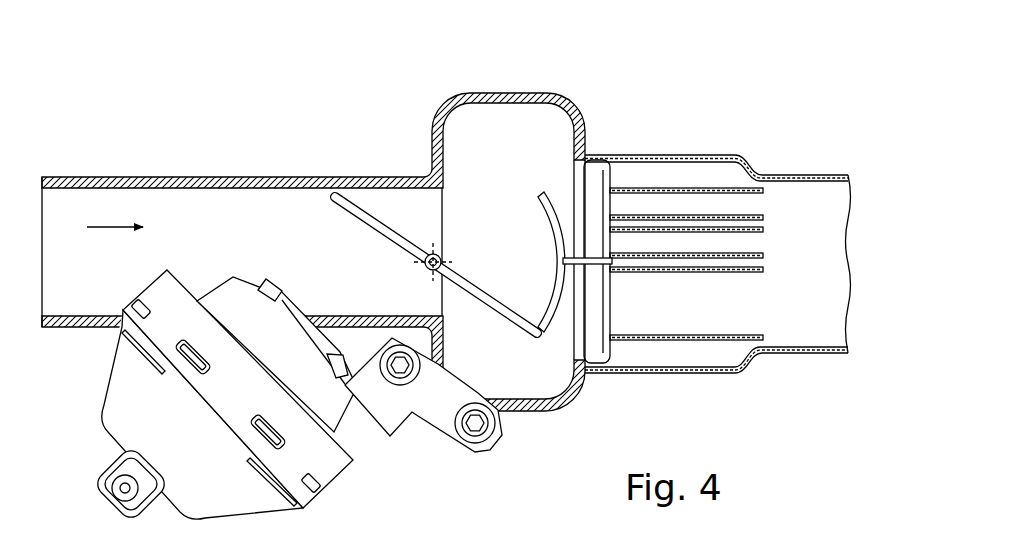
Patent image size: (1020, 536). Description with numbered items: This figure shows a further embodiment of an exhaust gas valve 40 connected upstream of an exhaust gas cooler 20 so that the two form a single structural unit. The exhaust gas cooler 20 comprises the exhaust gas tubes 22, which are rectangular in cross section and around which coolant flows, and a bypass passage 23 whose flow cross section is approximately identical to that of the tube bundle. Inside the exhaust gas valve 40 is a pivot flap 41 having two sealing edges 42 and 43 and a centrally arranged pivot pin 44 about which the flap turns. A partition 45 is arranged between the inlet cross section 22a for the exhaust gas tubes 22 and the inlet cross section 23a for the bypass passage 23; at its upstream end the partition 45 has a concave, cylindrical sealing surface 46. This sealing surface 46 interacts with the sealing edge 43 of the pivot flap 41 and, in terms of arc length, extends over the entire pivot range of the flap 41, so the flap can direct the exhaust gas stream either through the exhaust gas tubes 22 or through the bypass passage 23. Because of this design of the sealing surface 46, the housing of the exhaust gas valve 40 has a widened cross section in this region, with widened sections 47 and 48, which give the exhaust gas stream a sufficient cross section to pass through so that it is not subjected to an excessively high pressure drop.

The exhaust gas cooler 20 is at (676, 156).
The exhaust gas tubes 22 is at (753, 243).
The inlet cross section for the exhaust gas tubes 22a is at (593, 205).
The bypass passage 23 is at (685, 322).
The inlet cross section for the bypass passage 23a is at (593, 313).
The exhaust gas valve 40 is at (226, 176).
The pivot flap 41 is at (378, 221).
The sealing edge 42 is at (335, 193).
The sealing edge 43 is at (539, 334).
The pivot pin 44 is at (450, 250).
The partition 45 is at (563, 261).
The sealing surface 46 is at (542, 227).
The widened section 47 is at (503, 92).
The widened section 48 is at (553, 412).